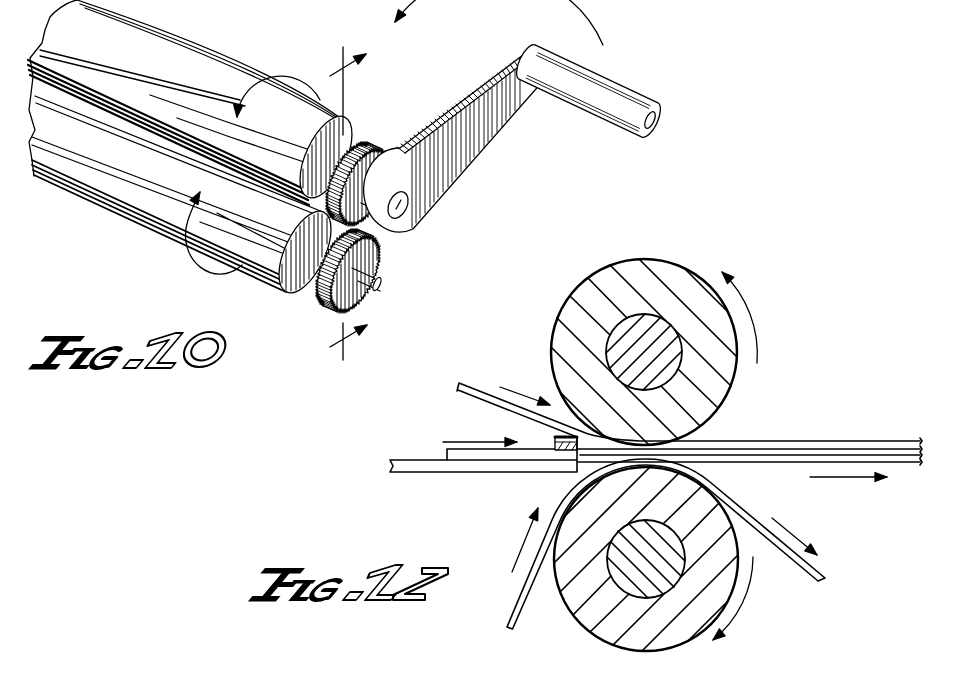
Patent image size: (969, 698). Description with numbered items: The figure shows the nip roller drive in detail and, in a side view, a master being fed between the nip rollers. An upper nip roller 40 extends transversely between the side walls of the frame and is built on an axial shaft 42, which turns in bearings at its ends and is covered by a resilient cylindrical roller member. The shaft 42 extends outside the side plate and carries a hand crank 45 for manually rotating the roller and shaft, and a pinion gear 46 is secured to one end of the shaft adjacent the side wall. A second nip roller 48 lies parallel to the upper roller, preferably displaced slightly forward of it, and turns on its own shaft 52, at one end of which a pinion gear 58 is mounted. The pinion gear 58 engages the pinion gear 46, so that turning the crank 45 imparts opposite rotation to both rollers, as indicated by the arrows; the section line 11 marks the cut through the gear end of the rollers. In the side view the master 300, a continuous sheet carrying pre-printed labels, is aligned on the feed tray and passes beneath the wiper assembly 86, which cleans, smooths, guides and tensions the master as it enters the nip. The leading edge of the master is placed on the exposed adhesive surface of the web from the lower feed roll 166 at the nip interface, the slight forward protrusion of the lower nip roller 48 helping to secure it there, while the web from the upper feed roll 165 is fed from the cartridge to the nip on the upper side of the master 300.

In FIG. 10, the upper nip roller 40 is at (172, 80).
In FIG. 12, the upper nip roller 40 is at (590, 290).
In FIG. 10, the second nip roller 48 is at (158, 180).
In FIG. 12, the second nip roller 48 is at (610, 630).
In FIG. 10, the axial shaft 42 is at (342, 143).
In FIG. 10, the pinion gear 46 is at (388, 147).
In FIG. 10, the hand crank 45 is at (457, 157).
In FIG. 10, the shaft 52 is at (300, 290).
In FIG. 10, the pinion gear 58 is at (385, 258).
In FIG. 10, the section line 11- 11 is at (334, 75).
In FIG. 12, the upper feed roll 165 is at (476, 384).
In FIG. 12, the wiper assembly 86 is at (548, 431).
In FIG. 12, the master 300 is at (437, 473).
In FIG. 12, the lower feed roll 166 is at (510, 617).